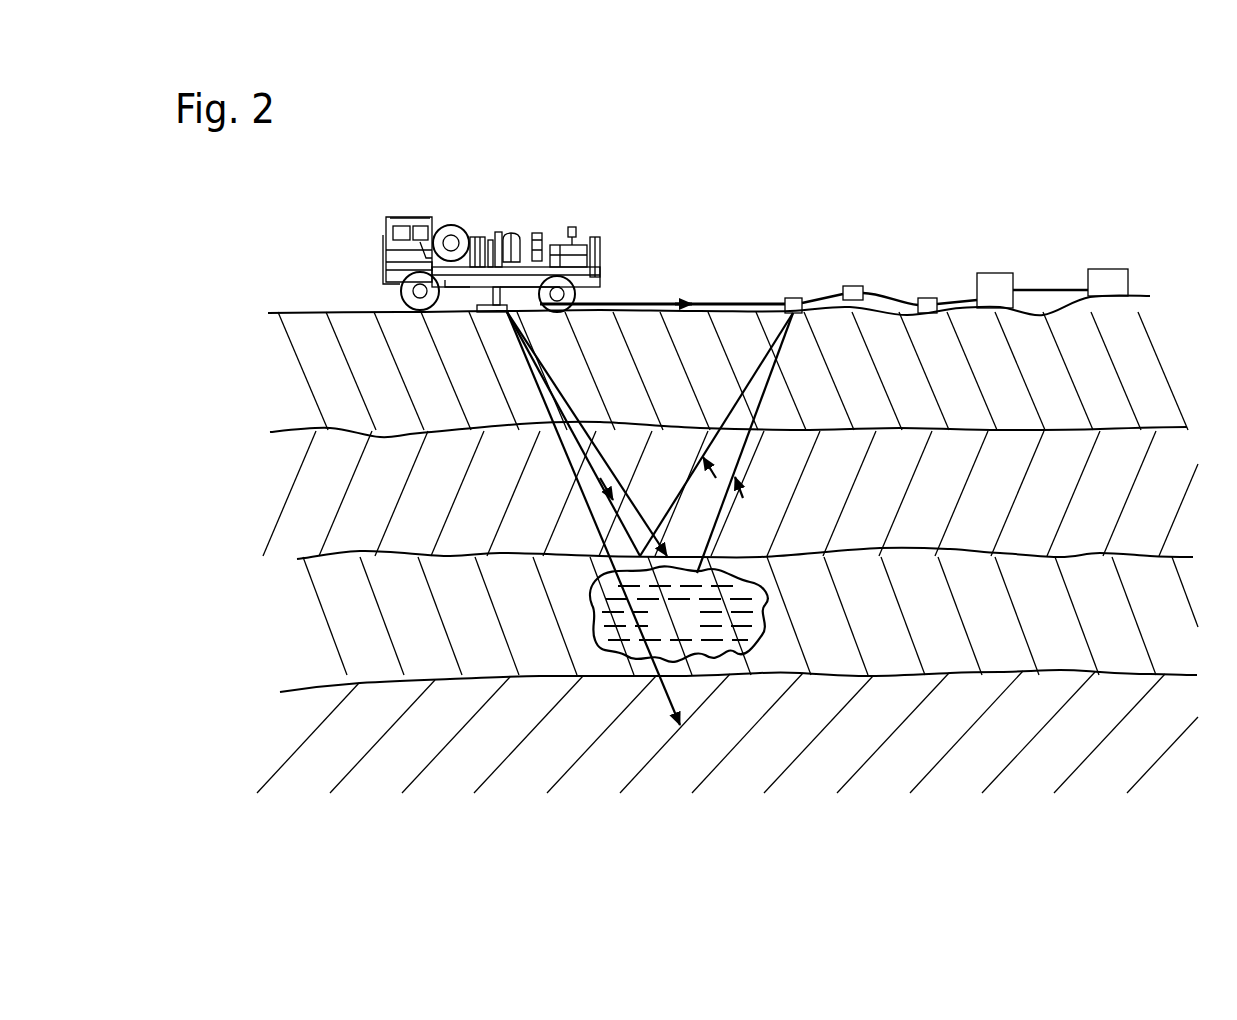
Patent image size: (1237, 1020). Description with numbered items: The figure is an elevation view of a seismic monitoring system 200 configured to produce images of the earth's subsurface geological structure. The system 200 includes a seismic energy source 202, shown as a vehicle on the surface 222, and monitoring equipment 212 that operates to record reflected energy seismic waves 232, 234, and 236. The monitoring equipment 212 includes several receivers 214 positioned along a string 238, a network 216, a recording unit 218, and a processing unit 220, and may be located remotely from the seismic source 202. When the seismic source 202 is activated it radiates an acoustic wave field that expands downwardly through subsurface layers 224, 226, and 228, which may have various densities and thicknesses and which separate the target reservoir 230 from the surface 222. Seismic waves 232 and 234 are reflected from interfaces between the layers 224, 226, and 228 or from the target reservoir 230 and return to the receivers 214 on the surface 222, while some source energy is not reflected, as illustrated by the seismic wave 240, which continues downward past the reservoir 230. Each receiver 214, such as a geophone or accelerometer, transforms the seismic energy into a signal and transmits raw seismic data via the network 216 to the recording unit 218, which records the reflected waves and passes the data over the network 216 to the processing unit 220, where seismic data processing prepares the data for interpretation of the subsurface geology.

The seismic monitoring system 200 is at (489, 120).
The seismic energy source 202 is at (588, 240).
The monitoring equipment 212 is at (1056, 240).
The receiver 214 is at (793, 298).
The network 216 is at (1057, 290).
The recording unit 218 is at (995, 273).
The processing unit 220 is at (1108, 269).
The surface 222 is at (666, 303).
The subsurface layer 224 is at (352, 403).
The subsurface layer 226 is at (327, 518).
The subsurface layer 228 is at (320, 653).
The target reservoir 230 is at (692, 625).
The seismic wave 232 is at (598, 478).
The seismic wave 234 is at (718, 516).
The reflected energy seismic wave 236 is at (714, 301).
The string 238 is at (890, 294).
The seismic wave 240 is at (656, 680).